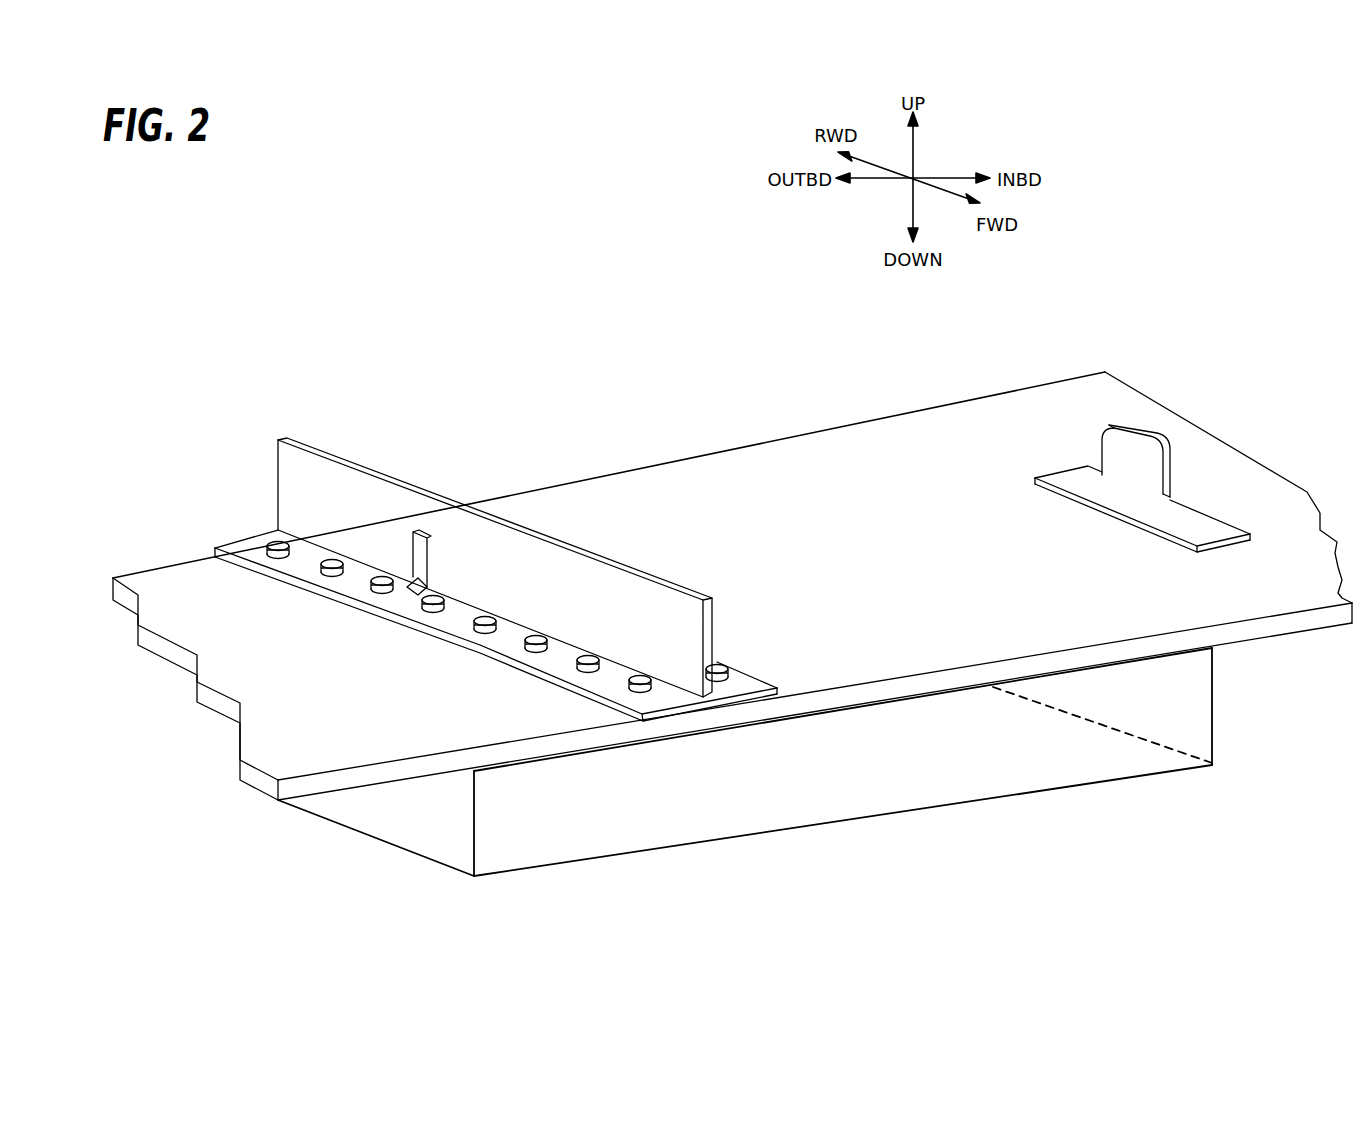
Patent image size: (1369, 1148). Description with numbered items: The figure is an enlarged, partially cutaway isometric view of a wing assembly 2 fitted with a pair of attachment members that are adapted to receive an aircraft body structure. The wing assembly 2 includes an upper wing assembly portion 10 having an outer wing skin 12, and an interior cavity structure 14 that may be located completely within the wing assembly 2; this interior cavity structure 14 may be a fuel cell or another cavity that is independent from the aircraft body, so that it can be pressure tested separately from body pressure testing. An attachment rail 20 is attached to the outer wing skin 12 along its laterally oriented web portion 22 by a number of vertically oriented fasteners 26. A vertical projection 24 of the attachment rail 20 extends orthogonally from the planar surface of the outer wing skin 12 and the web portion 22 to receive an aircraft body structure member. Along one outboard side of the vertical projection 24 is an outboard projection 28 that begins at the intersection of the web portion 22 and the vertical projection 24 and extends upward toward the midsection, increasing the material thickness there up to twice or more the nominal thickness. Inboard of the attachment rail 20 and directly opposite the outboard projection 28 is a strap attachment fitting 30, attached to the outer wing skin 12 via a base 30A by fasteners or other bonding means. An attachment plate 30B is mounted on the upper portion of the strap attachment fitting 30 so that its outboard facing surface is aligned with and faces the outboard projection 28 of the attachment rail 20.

The wing assembly 2 is at (194, 777).
The upper wing assembly portion 10 is at (238, 668).
The outer wing skin 12 is at (203, 582).
The interior cavity structure 14 is at (745, 762).
The attachment rail 20 is at (278, 487).
The web portion 22 is at (248, 555).
The vertical projection 24 is at (318, 452).
The fasteners 26 is at (630, 688).
The outboard projection 28 is at (463, 582).
The strap attachment fitting 30 is at (1230, 532).
The base 30A is at (1170, 535).
The attachment plate 30B is at (1137, 460).